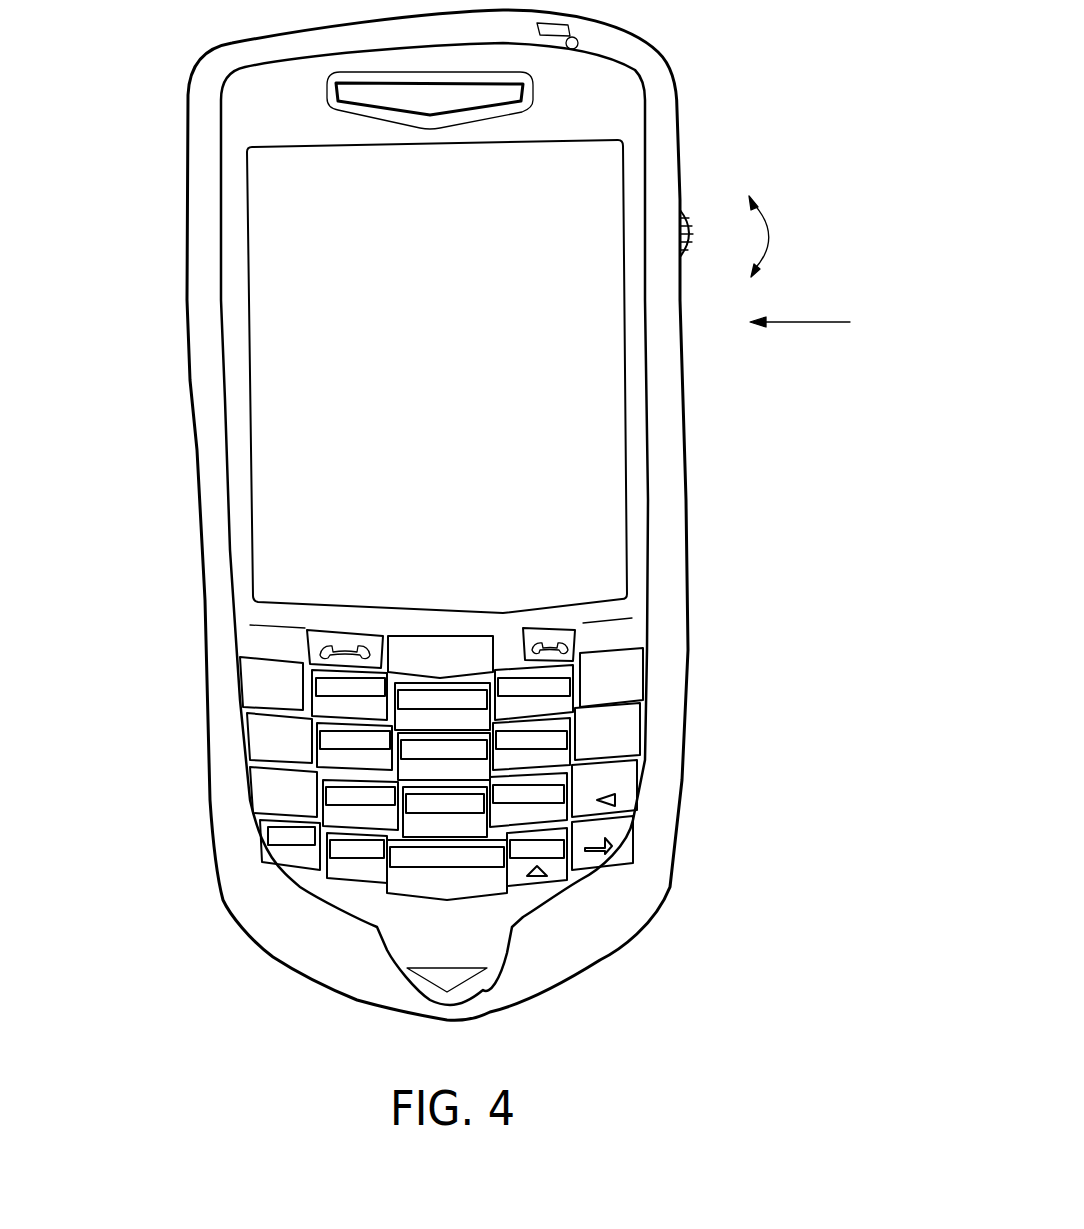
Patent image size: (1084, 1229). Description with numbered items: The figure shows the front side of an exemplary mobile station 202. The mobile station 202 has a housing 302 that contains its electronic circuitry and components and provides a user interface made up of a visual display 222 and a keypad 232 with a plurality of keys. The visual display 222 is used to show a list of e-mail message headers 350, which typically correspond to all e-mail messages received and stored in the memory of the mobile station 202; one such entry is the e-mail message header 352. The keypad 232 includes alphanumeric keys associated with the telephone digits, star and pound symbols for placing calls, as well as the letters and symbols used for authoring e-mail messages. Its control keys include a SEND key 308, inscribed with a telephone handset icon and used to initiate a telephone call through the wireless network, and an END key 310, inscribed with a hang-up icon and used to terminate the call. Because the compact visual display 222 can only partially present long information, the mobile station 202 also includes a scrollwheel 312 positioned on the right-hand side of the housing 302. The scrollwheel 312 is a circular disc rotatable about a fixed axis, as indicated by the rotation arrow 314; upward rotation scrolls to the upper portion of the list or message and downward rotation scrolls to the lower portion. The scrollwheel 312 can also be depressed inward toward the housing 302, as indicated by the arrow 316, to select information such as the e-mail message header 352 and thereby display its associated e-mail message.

The mobile station 202 is at (821, 936).
The visual display 222 is at (280, 200).
The keypad 232 is at (724, 670).
The housing 302 is at (673, 107).
The SEND key 308 is at (317, 628).
The END key 310 is at (563, 633).
The scrollwheel 312 is at (690, 213).
The rotation arrow 314 is at (770, 235).
The arrow 316 is at (797, 323).
The e-mail message headers 350 is at (195, 271).
The e-mail message header 352 is at (273, 333).